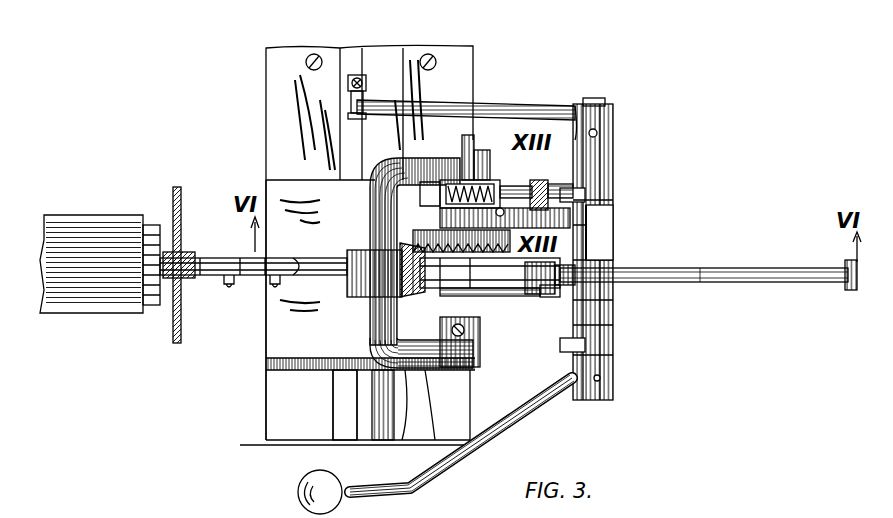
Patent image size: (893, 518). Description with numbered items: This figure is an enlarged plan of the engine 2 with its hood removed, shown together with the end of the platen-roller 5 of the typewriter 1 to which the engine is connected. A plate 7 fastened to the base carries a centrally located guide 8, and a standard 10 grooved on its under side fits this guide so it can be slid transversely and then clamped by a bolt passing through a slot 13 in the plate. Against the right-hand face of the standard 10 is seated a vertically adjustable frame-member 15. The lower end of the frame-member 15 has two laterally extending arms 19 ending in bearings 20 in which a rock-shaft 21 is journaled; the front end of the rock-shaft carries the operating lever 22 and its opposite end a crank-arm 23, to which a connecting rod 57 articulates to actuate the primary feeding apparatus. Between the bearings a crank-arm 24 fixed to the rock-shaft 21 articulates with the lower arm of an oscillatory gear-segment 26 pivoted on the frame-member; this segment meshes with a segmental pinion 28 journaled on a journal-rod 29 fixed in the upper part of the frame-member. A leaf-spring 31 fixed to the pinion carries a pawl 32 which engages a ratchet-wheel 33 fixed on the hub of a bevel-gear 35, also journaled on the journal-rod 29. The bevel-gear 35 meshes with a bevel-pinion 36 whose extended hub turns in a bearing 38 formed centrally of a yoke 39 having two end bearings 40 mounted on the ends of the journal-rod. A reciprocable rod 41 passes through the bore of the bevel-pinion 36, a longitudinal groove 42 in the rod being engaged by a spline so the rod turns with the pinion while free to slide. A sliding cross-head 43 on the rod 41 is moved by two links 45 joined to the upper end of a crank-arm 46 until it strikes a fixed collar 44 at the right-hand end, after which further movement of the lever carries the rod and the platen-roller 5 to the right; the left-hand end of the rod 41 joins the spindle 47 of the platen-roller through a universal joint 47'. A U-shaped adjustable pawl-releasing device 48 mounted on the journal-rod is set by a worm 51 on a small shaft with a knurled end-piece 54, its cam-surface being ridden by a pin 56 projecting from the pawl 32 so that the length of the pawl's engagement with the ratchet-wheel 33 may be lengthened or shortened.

The typewriter 1 is at (172, 196).
The engine 2 is at (614, 242).
The platen-roller 5 is at (72, 215).
The plate 7 is at (270, 415).
The guide 8 is at (333, 394).
The standard 10 is at (268, 333).
The slot 13 is at (370, 150).
The frame-member 15 is at (440, 380).
The laterally extending arms 19 is at (580, 194).
The bearings 20 is at (613, 205).
The rock-shaft 21 is at (598, 100).
The operating lever 22 is at (460, 466).
The crank-arm 23 is at (505, 108).
The crank-arm 24 is at (613, 222).
The oscillatory gear-segment 26 is at (575, 190).
The segmental pinion 28 is at (540, 183).
The journal-rod 29 is at (462, 160).
The leaf-spring 31 is at (400, 192).
The pawl 32 is at (380, 218).
The ratchet-wheel 33 is at (580, 228).
The bevel-gear 35 is at (547, 278).
The bevel-pinion 36 is at (383, 440).
The bearing 38 is at (372, 290).
The yoke 39 is at (335, 362).
The end bearings 40 is at (480, 175).
The reciprocable rod 41 is at (768, 268).
The longitudinal groove 42 is at (762, 285).
The sliding cross-head 43 is at (590, 300).
The fixed collar 44 is at (845, 290).
The links 45 is at (490, 270).
The crank-arm 46 is at (614, 293).
The spindle 47 is at (253, 252).
The universal joint 47' is at (304, 250).
The pawl-releasing device 48 is at (380, 174).
The worm 51 is at (480, 215).
The knurled end-piece 54 is at (555, 170).
The pin 56 is at (380, 171).
The connecting rod 57 is at (360, 75).